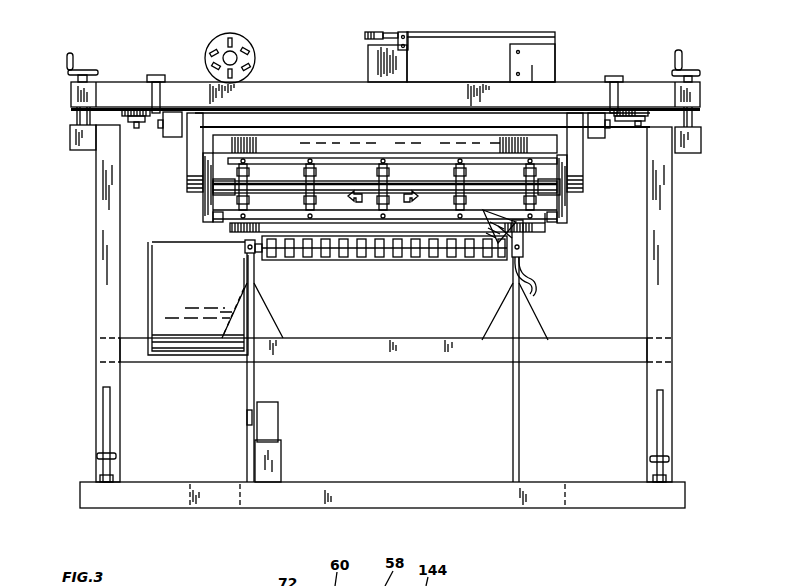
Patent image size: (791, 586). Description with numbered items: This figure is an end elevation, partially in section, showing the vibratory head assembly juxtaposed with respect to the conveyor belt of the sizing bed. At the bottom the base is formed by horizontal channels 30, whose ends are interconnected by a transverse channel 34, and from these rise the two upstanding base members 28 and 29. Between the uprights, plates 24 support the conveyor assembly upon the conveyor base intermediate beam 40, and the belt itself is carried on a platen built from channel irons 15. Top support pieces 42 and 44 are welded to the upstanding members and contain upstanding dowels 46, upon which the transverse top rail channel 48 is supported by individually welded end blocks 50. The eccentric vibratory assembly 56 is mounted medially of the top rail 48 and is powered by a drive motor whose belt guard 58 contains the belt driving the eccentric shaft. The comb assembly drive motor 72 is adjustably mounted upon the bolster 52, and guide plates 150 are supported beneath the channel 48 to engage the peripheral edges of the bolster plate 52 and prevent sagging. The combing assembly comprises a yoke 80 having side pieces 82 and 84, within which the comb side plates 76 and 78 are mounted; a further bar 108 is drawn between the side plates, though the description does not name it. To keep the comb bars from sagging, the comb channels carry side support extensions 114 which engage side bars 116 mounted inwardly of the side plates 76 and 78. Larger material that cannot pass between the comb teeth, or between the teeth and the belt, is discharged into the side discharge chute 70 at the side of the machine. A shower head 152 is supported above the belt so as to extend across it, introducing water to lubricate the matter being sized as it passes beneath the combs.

The channel irons 15 is at (430, 260).
The plates 24 is at (256, 388).
The upstanding base member 28 is at (660, 300).
The upstanding base member 29 is at (108, 272).
The horizontal channels 30 is at (667, 490).
The transverse channel 34 is at (432, 480).
The beam 40 is at (268, 462).
The top support piece 42 is at (697, 146).
The top support piece 44 is at (78, 136).
The upstanding dowels 46 is at (693, 71).
The transverse top rail channel 48 is at (361, 106).
The end blocks 50 is at (84, 94).
The bolster 52 is at (180, 108).
The eccentric vibratory assembly 56 is at (380, 62).
The belt guard 58 is at (457, 36).
The side discharge chute 70 is at (196, 303).
The comb assembly drive motor 72 is at (255, 62).
The comb side plate 76 is at (568, 200).
The comb side plate 78 is at (206, 216).
The yoke 80 is at (430, 125).
The side piece 82 is at (196, 176).
The side piece 84 is at (575, 170).
The guide bar 108 is at (385, 144).
The side support extensions 114 is at (545, 222).
The side bars 116 is at (553, 222).
The guide plates 150 is at (140, 123).
The shower head 152 is at (490, 245).